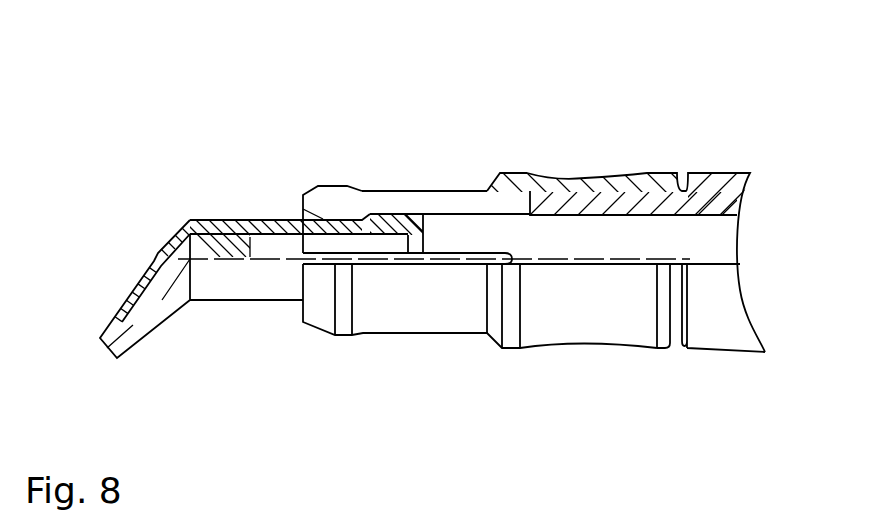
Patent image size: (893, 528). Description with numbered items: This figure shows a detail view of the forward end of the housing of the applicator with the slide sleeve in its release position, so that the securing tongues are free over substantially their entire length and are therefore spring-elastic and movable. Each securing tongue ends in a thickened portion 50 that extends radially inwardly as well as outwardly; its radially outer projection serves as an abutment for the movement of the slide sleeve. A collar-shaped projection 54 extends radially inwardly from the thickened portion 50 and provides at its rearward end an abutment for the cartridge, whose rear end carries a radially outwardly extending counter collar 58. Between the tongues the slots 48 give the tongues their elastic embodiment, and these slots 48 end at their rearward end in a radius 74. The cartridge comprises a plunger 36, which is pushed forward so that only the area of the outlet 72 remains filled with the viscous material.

The plunger 36 is at (212, 245).
The thickened portion 50 is at (337, 200).
The collar-shaped projection 54 is at (360, 213).
The counter collar 58 is at (412, 222).
The outlet 72 is at (153, 320).
The slots 48 is at (400, 265).
The radius 74 is at (512, 264).